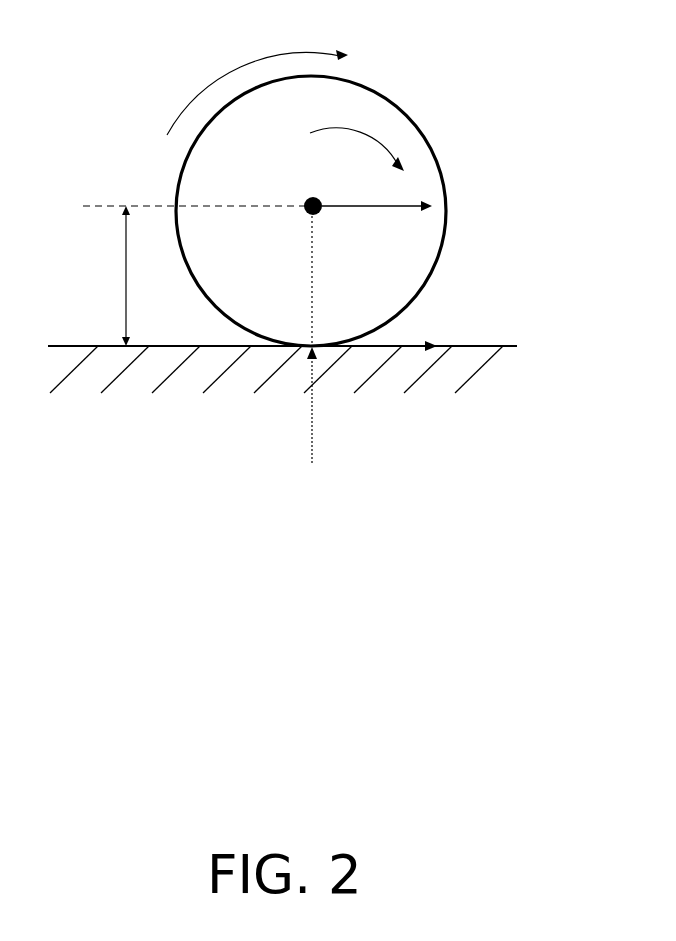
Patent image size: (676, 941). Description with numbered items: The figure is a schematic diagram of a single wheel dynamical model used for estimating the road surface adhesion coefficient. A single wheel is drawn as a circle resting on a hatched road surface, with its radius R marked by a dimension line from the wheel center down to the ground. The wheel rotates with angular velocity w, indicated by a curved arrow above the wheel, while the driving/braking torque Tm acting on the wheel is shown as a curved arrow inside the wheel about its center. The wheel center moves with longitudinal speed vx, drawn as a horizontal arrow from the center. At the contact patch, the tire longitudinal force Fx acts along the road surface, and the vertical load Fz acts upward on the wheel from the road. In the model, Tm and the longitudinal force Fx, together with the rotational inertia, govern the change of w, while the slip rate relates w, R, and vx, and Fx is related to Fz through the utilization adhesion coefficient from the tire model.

The radius of the wheel R is at (108, 276).
The angular velocity of the wheel w is at (257, 67).
The driving/braking torque Tm is at (328, 133).
The longitudinal speed at a center of the wheel vx is at (377, 239).
The tire longitudinal force Fx is at (403, 309).
The vertical load acting on the wheel Fz is at (338, 407).